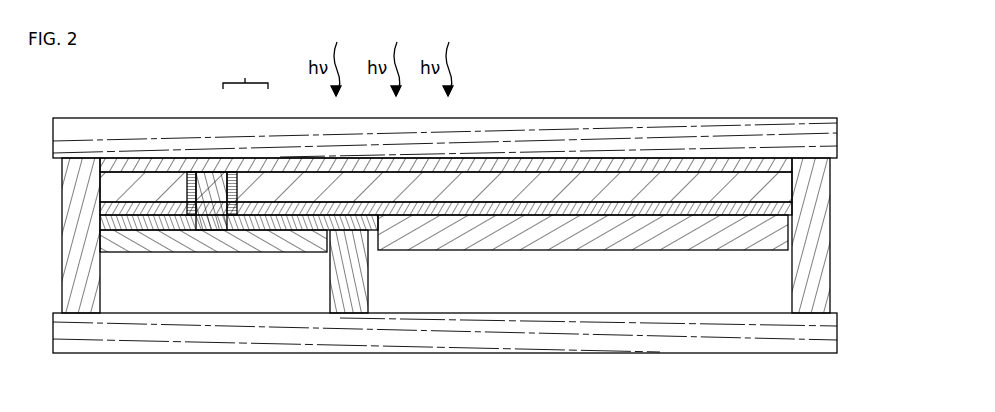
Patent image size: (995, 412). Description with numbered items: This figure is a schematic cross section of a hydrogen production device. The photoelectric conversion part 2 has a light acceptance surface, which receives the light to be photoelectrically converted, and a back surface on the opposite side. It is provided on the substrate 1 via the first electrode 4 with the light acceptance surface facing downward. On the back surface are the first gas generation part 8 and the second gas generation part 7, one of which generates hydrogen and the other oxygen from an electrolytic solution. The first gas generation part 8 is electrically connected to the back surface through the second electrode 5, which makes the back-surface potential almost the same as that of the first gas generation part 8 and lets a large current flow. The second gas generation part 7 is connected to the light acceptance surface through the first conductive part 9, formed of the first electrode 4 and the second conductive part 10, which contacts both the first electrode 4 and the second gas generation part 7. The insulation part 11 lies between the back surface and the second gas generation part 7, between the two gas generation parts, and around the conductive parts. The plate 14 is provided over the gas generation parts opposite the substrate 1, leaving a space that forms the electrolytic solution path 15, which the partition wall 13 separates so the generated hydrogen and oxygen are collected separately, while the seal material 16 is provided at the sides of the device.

The substrate 1 is at (68, 138).
The photoelectric conversion part 2 is at (478, 182).
The first electrode 4 is at (241, 165).
The second electrode 5 is at (627, 212).
The second gas generation part 7 is at (210, 232).
The first gas generation part 8 is at (628, 236).
The first conductive part 9 is at (245, 71).
The second conductive part 10 is at (213, 197).
The insulation part 11 is at (193, 197).
The partition wall 13 is at (347, 300).
The plate 14 is at (455, 335).
The electrolytic solution path 15 is at (268, 278).
The seal material 16 is at (76, 276).